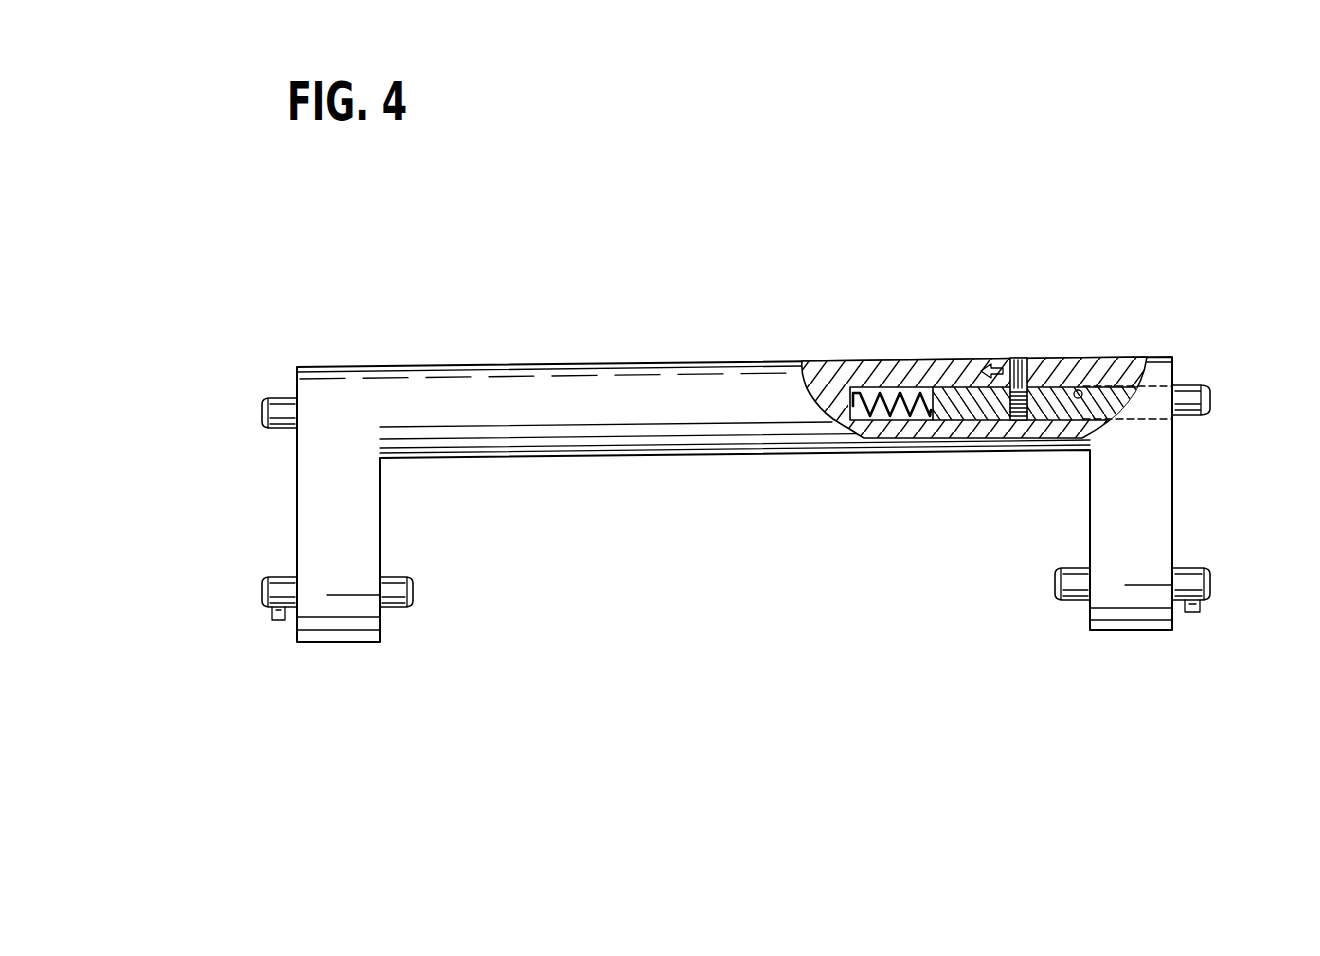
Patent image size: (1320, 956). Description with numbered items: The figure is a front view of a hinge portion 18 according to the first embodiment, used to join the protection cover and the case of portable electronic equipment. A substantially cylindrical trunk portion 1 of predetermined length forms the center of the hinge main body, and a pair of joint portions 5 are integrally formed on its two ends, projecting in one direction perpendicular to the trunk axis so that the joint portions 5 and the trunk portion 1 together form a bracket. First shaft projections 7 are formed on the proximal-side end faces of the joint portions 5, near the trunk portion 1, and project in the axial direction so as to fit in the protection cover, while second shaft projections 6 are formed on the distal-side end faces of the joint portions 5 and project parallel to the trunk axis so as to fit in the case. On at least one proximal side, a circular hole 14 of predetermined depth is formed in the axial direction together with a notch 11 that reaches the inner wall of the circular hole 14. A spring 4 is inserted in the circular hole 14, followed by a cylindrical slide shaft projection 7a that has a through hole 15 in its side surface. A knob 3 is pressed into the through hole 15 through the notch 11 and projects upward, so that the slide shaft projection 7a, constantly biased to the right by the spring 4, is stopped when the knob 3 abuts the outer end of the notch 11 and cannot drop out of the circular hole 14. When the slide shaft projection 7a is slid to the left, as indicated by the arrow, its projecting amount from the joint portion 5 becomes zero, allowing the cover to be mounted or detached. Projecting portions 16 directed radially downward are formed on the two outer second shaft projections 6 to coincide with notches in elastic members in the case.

The trunk portion 1 is at (648, 392).
The knob 3 is at (1015, 370).
The spring 4 is at (900, 365).
The joint portions 5 is at (318, 512).
The second shaft projections 6 is at (275, 590).
The first shaft projections 7 is at (275, 412).
The slide shaft projection 7a is at (1210, 393).
The notch 11 is at (975, 372).
The circular hole 14 is at (1079, 390).
The through hole 15 is at (1015, 413).
The projecting portions 16 is at (272, 617).
The hinge portion 18 is at (437, 305).